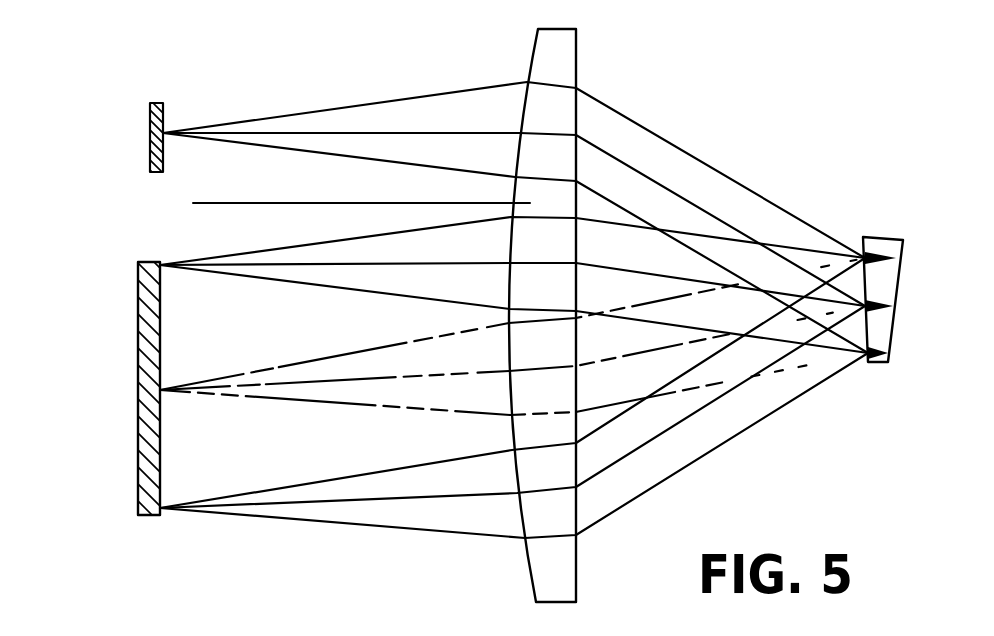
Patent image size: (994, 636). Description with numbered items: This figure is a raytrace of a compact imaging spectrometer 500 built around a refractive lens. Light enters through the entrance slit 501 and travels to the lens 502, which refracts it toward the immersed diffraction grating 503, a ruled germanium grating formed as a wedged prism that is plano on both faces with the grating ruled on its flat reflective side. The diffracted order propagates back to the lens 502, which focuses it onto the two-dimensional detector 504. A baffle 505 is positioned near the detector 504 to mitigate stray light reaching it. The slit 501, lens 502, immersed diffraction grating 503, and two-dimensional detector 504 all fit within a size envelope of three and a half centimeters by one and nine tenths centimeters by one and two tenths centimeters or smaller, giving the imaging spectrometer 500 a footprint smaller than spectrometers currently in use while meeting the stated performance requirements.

The compact imaging spectrometer 500 is at (768, 68).
The slit 501 is at (149, 143).
The lens 502 is at (577, 62).
The immersed diffraction grating 503 is at (878, 366).
The 2D detector 504 is at (162, 458).
The baffle 505 is at (233, 201).